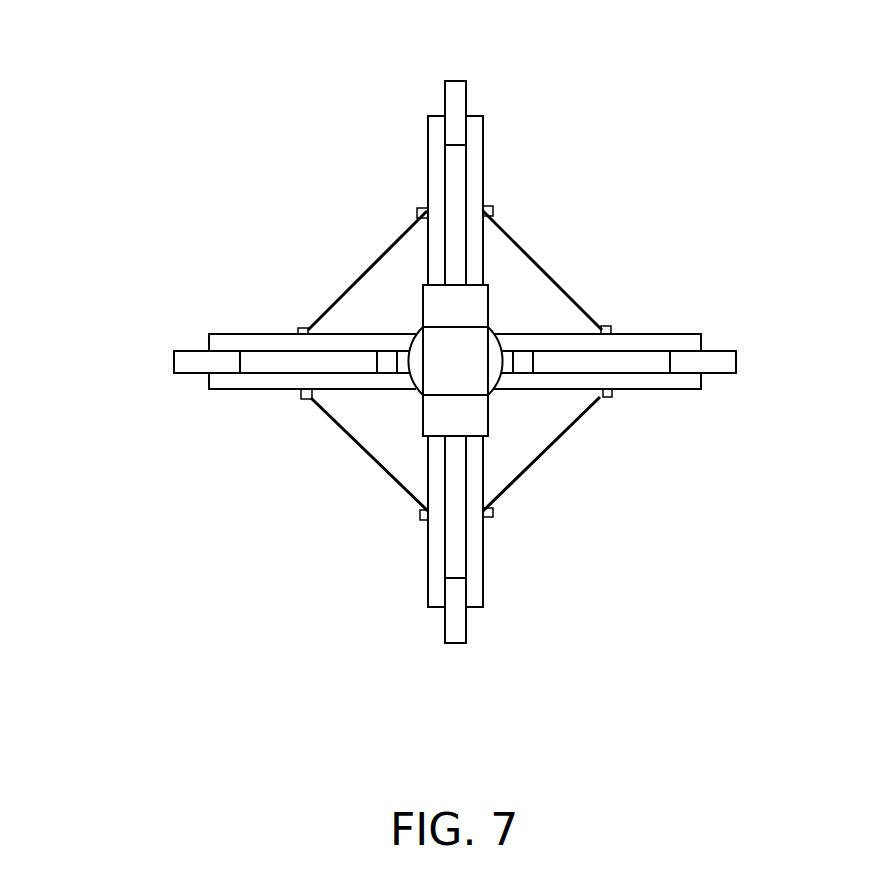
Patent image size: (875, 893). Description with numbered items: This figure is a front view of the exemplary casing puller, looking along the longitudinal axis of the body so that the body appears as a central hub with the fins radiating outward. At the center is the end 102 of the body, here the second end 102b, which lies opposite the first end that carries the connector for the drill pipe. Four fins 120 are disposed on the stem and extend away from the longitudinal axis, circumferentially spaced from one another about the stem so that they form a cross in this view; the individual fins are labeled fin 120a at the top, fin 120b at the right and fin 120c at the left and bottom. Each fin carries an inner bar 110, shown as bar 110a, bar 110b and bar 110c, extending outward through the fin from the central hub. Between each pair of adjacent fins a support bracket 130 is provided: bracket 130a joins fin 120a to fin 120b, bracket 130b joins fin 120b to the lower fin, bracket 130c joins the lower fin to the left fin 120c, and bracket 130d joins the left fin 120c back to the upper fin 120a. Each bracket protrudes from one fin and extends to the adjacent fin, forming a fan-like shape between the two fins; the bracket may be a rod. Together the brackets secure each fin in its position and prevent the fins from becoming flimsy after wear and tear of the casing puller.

The end 102 is at (356, 367).
The second end 102b is at (453, 367).
The inner bar 110 is at (458, 339).
The inner bar (top) 110a is at (456, 78).
The inner bar (right) 110b is at (720, 349).
The inner bar (left/bottom) 110c is at (200, 348).
The fin 120 is at (460, 352).
The fin 120a is at (423, 126).
The fin 120b is at (650, 334).
The outer sleeve (left/bottom) 120c is at (244, 332).
The support bracket 130 is at (469, 361).
The diagonal strut (upper right) 130a is at (527, 249).
The diagonal strut (lower right) 130b is at (556, 443).
The diagonal strut (lower left) 130c is at (378, 463).
The diagonal strut (upper left) 130d is at (388, 250).